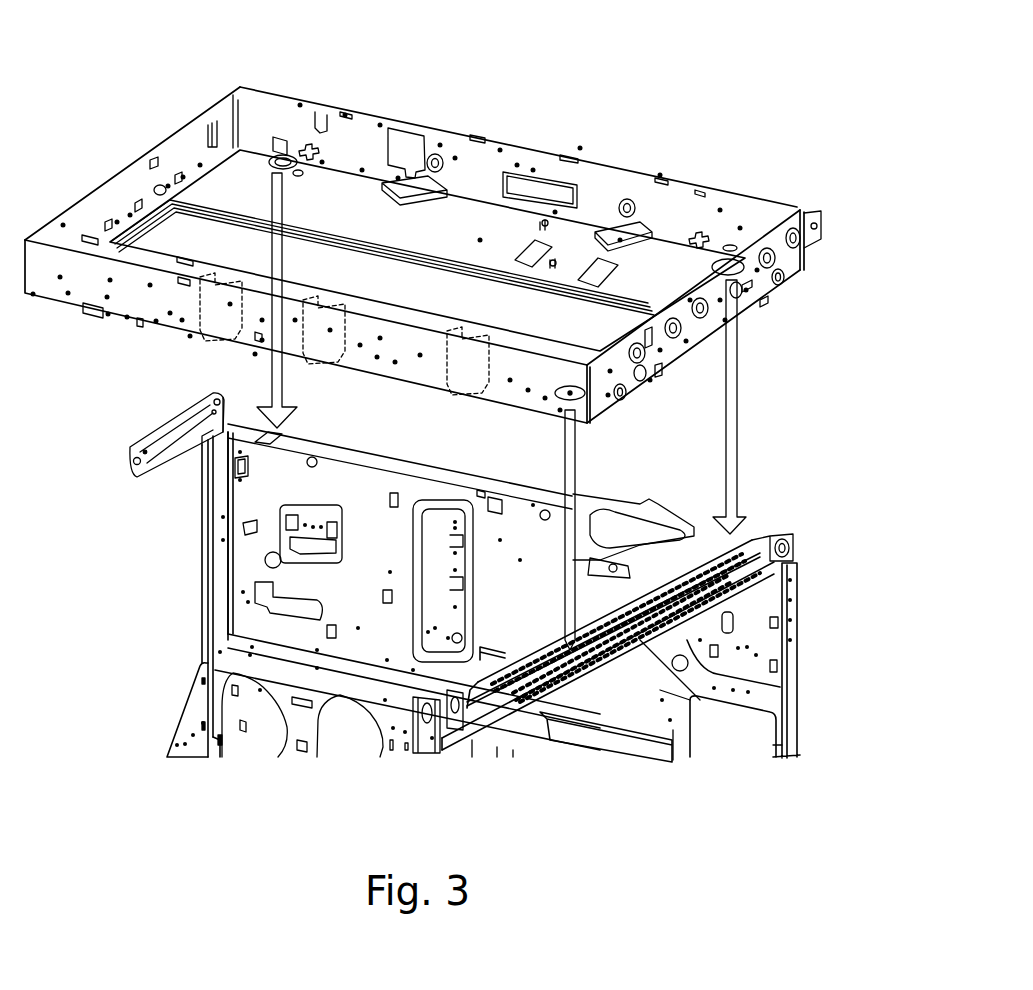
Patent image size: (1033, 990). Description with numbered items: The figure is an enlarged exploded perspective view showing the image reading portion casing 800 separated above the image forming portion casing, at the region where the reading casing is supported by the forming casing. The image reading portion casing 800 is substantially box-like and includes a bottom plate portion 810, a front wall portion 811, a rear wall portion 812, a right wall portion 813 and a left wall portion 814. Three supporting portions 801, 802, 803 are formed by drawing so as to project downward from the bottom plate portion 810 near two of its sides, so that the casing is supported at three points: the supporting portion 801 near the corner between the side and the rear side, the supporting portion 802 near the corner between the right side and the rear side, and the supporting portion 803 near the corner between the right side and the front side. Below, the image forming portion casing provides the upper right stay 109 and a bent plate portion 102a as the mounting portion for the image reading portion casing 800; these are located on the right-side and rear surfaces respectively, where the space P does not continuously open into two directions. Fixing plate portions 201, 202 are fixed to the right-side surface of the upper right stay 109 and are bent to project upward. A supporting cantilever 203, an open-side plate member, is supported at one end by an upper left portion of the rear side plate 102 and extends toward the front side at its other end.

The image reading portion casing 800 is at (447, 338).
The supporting portion 801 is at (276, 156).
The supporting portion 802 is at (747, 268).
The supporting portion 803 is at (592, 406).
The bottom plate portion 810 is at (482, 227).
The front wall portion 811 is at (167, 320).
The rear wall portion 812 is at (470, 163).
The right wall portion 813 is at (672, 350).
The left wall portion 814 is at (127, 213).
The space P is at (180, 657).
The rear side plate 102 is at (408, 542).
The bent plate portion 102a is at (403, 467).
The supporting cantilever 203 is at (198, 437).
The fixing plate portion 201 is at (633, 673).
The fixing plate portion 202 is at (795, 545).
The upper right stay 109 is at (683, 628).